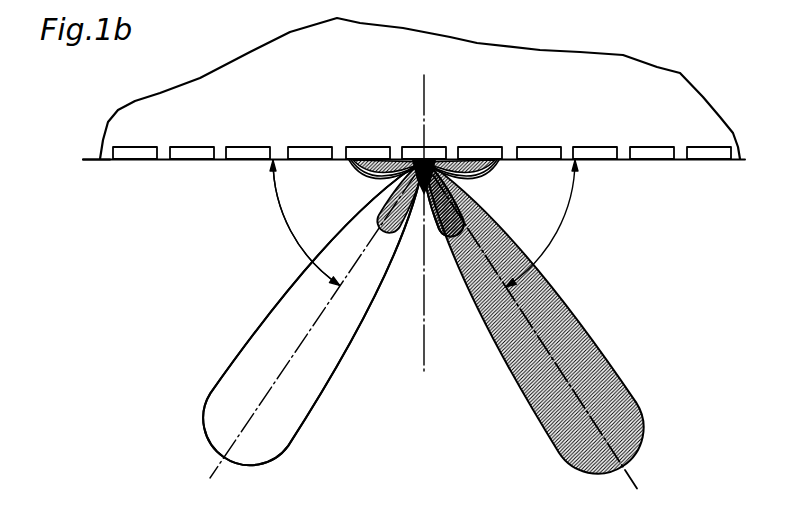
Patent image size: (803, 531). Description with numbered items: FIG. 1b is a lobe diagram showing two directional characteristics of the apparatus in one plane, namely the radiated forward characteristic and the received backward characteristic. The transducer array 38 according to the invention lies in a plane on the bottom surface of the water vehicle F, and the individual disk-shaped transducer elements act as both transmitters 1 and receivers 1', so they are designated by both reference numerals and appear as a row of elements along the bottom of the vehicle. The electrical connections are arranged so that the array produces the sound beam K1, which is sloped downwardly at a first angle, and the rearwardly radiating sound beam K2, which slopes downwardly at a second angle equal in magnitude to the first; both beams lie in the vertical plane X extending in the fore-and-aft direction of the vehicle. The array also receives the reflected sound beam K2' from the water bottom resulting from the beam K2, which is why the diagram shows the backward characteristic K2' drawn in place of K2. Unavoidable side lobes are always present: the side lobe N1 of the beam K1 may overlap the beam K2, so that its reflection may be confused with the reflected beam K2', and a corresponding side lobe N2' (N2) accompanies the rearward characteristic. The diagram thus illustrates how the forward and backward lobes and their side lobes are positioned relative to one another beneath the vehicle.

The transducer array 38 is at (91, 154).
The transmitters 1 is at (422, 104).
The receivers 1' is at (422, 153).
The water vehicle F is at (216, 78).
The vertical plane X is at (776, 142).
The sound beam K1 is at (595, 360).
The reflected sound beam K2' is at (283, 319).
The rearwardly radiating sound beam K2 is at (276, 312).
The side lobe N1 is at (405, 232).
The side lobe N2' is at (445, 238).
The side lobe N2 is at (454, 261).